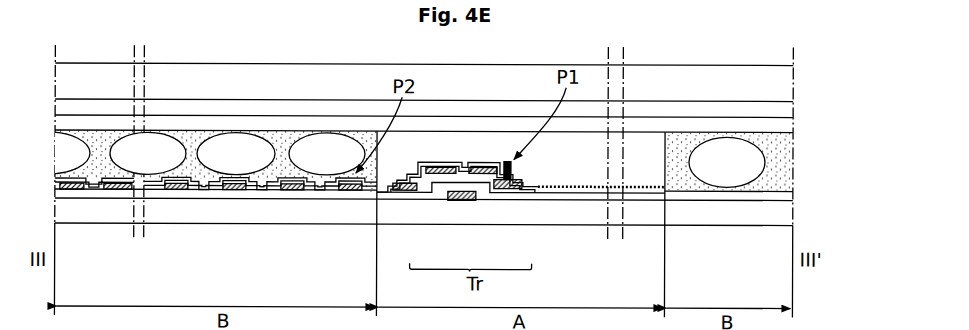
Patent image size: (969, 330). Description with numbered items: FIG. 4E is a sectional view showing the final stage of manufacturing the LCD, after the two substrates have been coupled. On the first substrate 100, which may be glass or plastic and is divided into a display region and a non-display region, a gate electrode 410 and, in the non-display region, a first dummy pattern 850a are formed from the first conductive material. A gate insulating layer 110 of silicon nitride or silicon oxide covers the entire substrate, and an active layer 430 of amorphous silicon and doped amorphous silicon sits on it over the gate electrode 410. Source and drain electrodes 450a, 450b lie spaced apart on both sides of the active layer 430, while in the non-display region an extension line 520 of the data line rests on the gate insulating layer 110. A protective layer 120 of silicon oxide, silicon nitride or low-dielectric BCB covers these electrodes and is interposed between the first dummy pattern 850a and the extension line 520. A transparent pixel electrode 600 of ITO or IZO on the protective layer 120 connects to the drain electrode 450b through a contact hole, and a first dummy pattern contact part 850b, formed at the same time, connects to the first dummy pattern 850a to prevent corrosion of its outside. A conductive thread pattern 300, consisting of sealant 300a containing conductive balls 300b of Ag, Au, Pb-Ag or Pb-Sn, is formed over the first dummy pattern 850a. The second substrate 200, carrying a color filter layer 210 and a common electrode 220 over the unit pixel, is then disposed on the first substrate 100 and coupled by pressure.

The first substrate 100 is at (795, 215).
The gate insulating layer 110 is at (795, 200).
The protective layer 120 is at (795, 190).
The second substrate 200 is at (795, 80).
The color filter layer 210 is at (795, 105).
The common electrode 220 is at (795, 123).
The conductive thread pattern 300 is at (448, 162).
The sealant 300a is at (770, 177).
The conductive ball 300b is at (750, 152).
The gate electrode 410 is at (465, 200).
The active layer 430 is at (425, 198).
The source electrode 450a is at (405, 198).
The drain electrode 450b is at (528, 198).
The extension line of the data line 520 is at (112, 190).
The pixel electrode 600 is at (577, 195).
The first dummy pattern 850a is at (238, 198).
The first dummy pattern contact part 850b is at (296, 198).